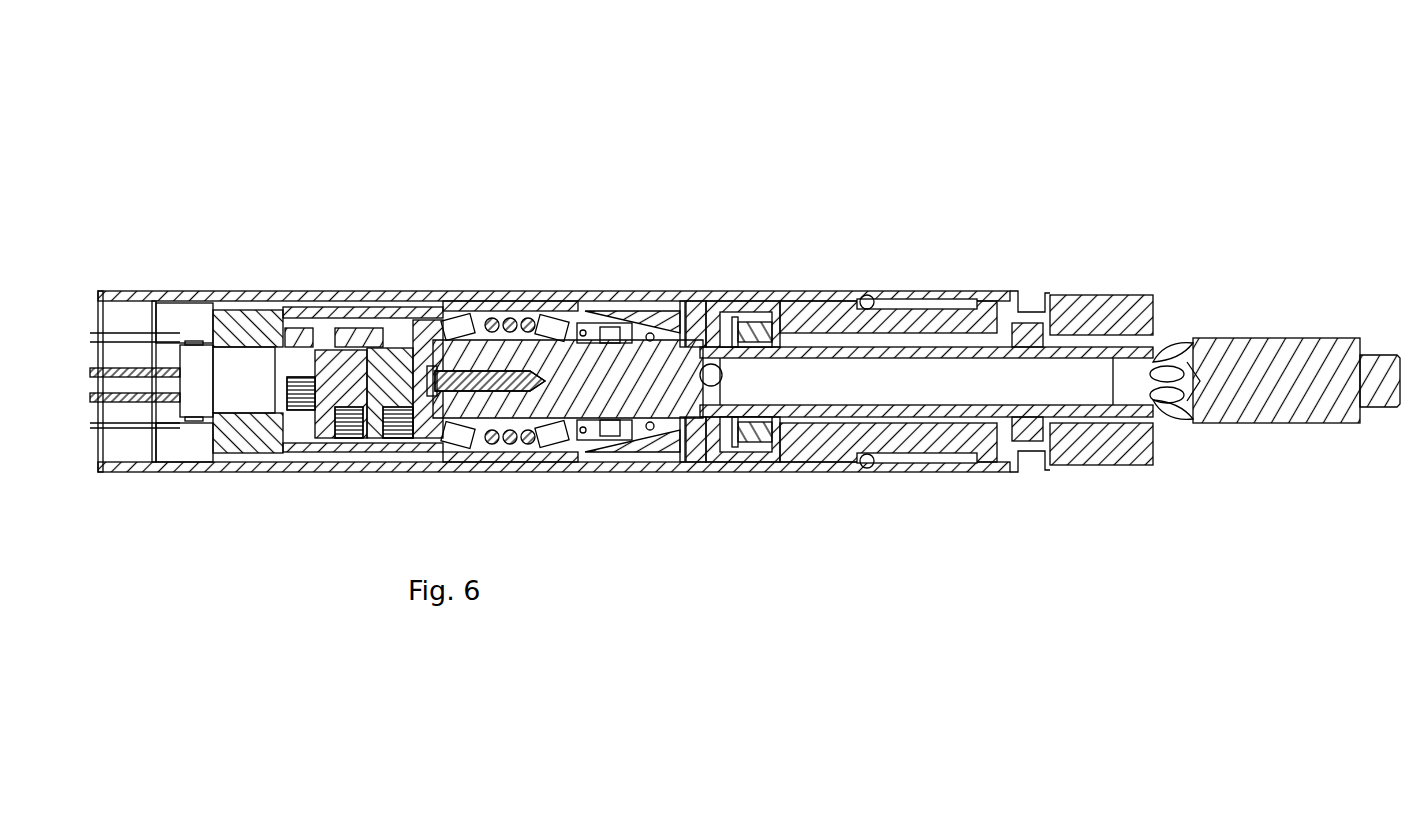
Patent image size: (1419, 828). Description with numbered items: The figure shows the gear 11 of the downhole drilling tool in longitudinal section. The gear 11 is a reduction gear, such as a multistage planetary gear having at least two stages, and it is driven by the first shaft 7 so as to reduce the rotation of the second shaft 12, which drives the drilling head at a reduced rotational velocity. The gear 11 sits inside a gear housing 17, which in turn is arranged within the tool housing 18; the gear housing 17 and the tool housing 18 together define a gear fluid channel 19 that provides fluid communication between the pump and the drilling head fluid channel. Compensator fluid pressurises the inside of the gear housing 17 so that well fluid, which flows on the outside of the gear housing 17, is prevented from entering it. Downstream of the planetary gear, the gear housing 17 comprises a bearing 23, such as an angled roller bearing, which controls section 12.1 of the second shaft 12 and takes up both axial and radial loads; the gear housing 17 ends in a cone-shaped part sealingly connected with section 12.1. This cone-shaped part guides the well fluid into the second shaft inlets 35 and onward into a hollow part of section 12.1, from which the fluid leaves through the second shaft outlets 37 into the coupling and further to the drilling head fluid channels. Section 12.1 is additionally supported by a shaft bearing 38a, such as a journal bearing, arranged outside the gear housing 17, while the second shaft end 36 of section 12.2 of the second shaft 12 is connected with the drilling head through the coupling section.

The gear 11 is at (1115, 100).
The first shaft 7 is at (187, 377).
The gear fluid channel 19 is at (348, 305).
The gear housing 17 is at (420, 340).
The bearing 23 is at (462, 315).
The tool housing 18 is at (673, 300).
The shaft bearing 38a is at (752, 333).
The second shaft inlets 35 is at (735, 470).
The second shaft 12 is at (968, 660).
The section of the second shaft 12.1 is at (622, 360).
The section of the second shaft 12.2 is at (1248, 360).
The second shaft end 36 is at (1377, 367).
The second shaft outlets 37 is at (1177, 343).